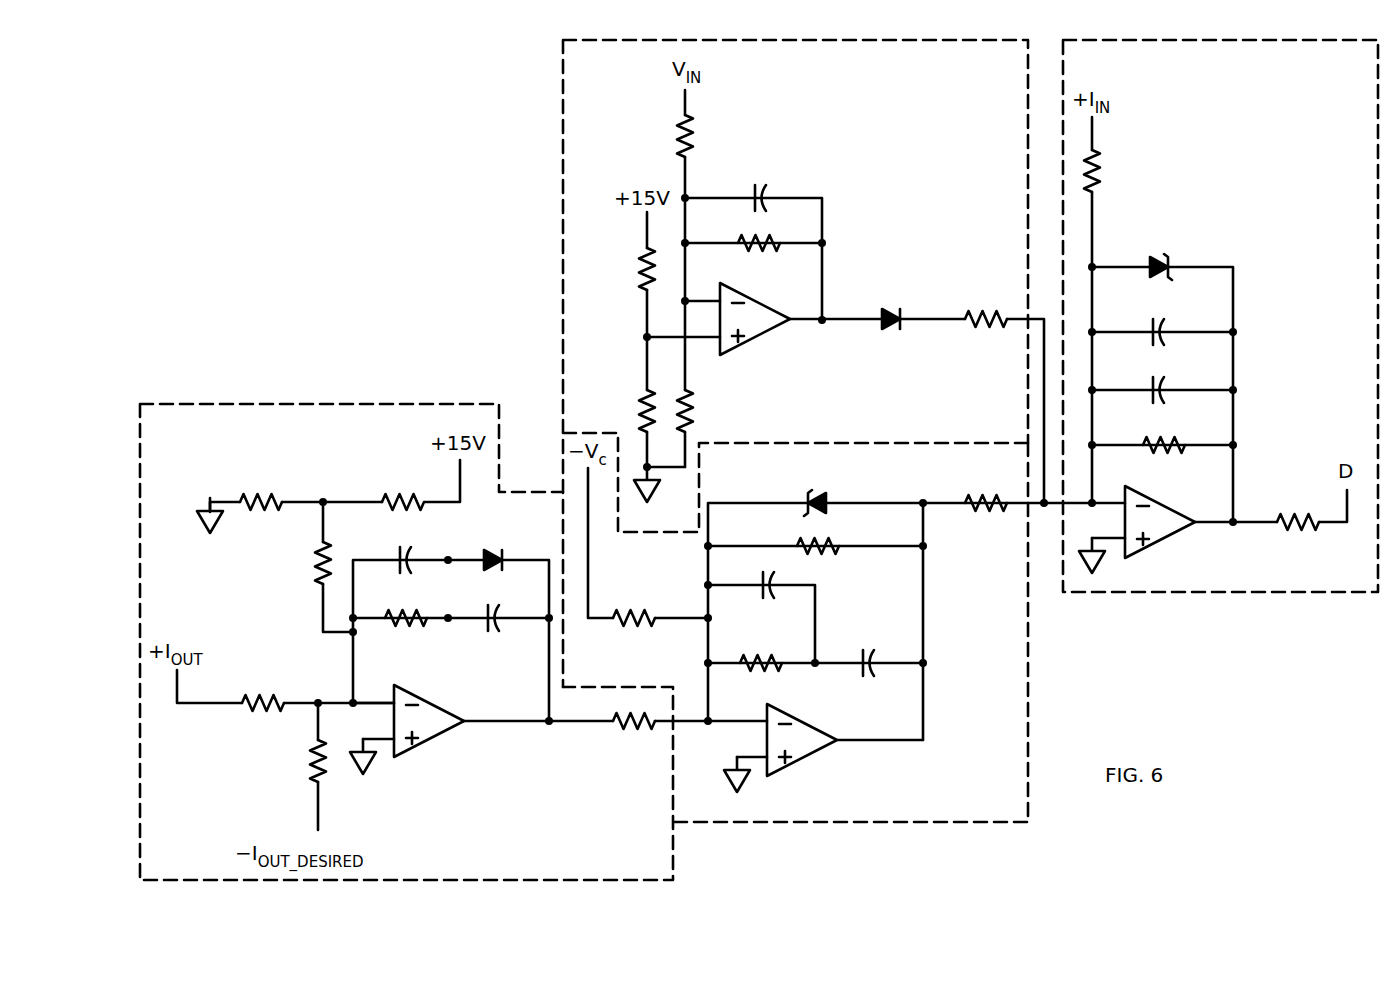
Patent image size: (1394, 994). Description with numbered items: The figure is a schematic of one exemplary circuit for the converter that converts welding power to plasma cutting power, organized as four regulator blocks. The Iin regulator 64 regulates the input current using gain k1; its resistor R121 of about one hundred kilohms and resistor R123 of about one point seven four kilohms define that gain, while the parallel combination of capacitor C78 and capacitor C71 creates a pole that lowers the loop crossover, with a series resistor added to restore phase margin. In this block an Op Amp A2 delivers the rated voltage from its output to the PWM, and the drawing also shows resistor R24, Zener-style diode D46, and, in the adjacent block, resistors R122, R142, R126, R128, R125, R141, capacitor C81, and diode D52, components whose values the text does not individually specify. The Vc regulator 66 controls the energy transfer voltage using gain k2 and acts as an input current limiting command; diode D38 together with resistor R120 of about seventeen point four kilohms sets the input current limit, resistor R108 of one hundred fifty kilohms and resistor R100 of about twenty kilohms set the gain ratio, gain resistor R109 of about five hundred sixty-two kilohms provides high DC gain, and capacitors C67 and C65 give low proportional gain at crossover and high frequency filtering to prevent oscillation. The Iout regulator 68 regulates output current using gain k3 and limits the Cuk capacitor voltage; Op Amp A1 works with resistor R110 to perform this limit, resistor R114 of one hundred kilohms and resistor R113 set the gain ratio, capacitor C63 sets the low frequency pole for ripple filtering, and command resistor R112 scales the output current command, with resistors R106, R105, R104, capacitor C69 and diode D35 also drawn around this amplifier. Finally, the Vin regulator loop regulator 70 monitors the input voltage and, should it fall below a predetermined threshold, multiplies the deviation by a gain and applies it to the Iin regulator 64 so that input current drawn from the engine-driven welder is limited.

The Iin regulator 64 is at (1063, 72).
The Vc regulator 66 is at (863, 822).
The Iout regulator 68 is at (323, 404).
The Vin regulator loop regulator 70 is at (563, 98).
The resistor R106 is at (289, 498).
The resistor R105 is at (421, 485).
The resistor R104 is at (307, 567).
The capacitor C69 is at (384, 551).
The diode D35 is at (490, 545).
The resistor R114 is at (406, 607).
The capacitor C63 is at (489, 636).
The operational amplifier A1 is at (449, 731).
The resistor R113 is at (285, 705).
The command resistor R112 is at (292, 766).
The resistor R110 is at (628, 735).
The resistor R142 is at (657, 144).
The capacitor C81 is at (761, 185).
The resistor R126 is at (761, 256).
The resistor R128 is at (619, 274).
The resistor R125 is at (633, 419).
The resistor R141 is at (714, 384).
The Op Amp A2 is at (764, 323).
The diode D52 is at (890, 304).
The resistor R122 is at (996, 391).
The resistor R100 is at (648, 547).
The diode D38 is at (818, 490).
The resistor R120 is at (988, 519).
The gain resistor R109 is at (840, 537).
The capacitor C65 is at (745, 576).
The resistor R108 is at (762, 652).
The capacitor C67 is at (867, 650).
The resistor R123 is at (1120, 192).
The zener diode D46 is at (1160, 254).
The capacitor C78 is at (1182, 324).
The capacitor C71 is at (1182, 382).
The resistor R121 is at (1164, 434).
The resistor R24 is at (1310, 522).